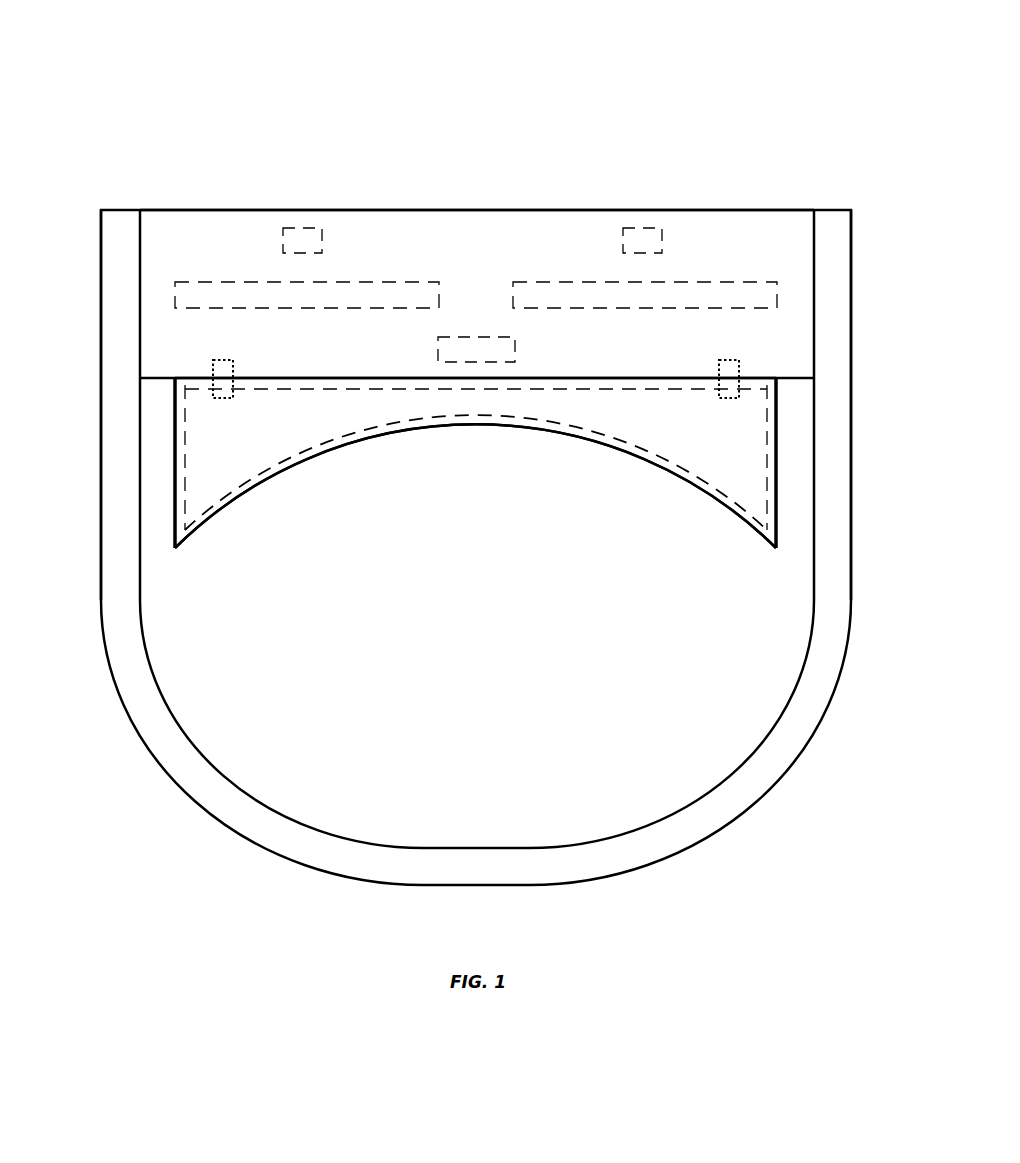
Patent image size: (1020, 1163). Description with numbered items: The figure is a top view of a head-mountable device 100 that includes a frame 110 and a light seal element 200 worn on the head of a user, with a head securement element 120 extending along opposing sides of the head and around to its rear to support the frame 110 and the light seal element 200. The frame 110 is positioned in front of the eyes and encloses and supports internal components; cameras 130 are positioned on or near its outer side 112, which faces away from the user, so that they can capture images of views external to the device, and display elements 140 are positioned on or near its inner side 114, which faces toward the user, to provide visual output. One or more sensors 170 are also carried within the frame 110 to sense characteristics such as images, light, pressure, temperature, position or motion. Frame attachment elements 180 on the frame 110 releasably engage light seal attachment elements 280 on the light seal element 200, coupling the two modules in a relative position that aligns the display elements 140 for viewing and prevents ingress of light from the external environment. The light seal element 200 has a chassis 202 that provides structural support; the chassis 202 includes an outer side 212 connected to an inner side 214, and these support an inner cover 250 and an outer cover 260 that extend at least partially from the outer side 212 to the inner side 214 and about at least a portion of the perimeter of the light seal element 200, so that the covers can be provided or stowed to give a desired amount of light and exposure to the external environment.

The head-mountable device 100 is at (166, 50).
The frame 110 is at (187, 210).
The outer side 112 is at (475, 210).
The inner side 114 is at (802, 383).
The head securement element 120 is at (120, 282).
The camera 130 is at (300, 228).
The display element 140 is at (235, 282).
The sensor 170 is at (468, 337).
The frame attachment element 180 is at (233, 378).
The light seal element 200 is at (175, 448).
The chassis 202 is at (175, 383).
The outer side 212 is at (512, 384).
The inner side 214 is at (478, 425).
The inner cover 250 is at (190, 500).
The outer cover 260 is at (365, 417).
The light seal attachment element 280 is at (220, 398).